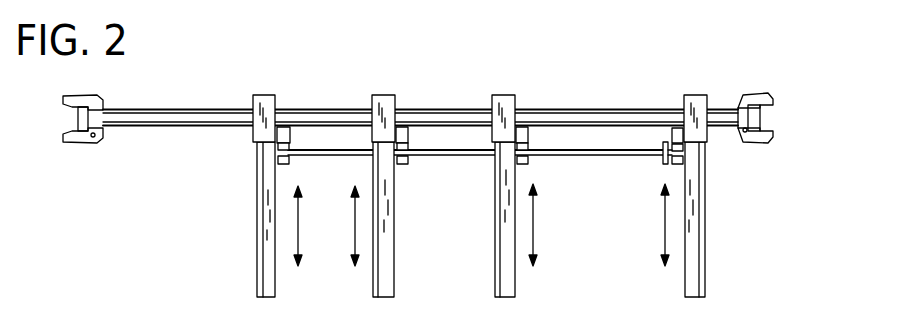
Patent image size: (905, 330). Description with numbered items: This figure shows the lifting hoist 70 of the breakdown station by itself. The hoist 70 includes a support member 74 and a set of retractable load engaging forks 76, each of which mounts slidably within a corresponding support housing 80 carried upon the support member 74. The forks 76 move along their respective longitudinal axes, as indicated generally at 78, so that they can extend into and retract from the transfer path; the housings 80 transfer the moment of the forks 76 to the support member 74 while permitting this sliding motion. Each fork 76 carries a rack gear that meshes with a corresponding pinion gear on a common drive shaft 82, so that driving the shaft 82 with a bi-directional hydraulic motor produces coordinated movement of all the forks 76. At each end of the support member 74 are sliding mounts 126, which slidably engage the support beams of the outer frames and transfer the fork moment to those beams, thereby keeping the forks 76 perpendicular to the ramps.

The lifting hoist 70 is at (750, 202).
The support member 74 is at (602, 108).
The retractable load engaging forks 76 is at (277, 278).
The fork movement direction 78 is at (354, 233).
The support housing 80 is at (265, 93).
The common drive shaft 82 is at (462, 158).
The sliding mounts 126 is at (78, 96).